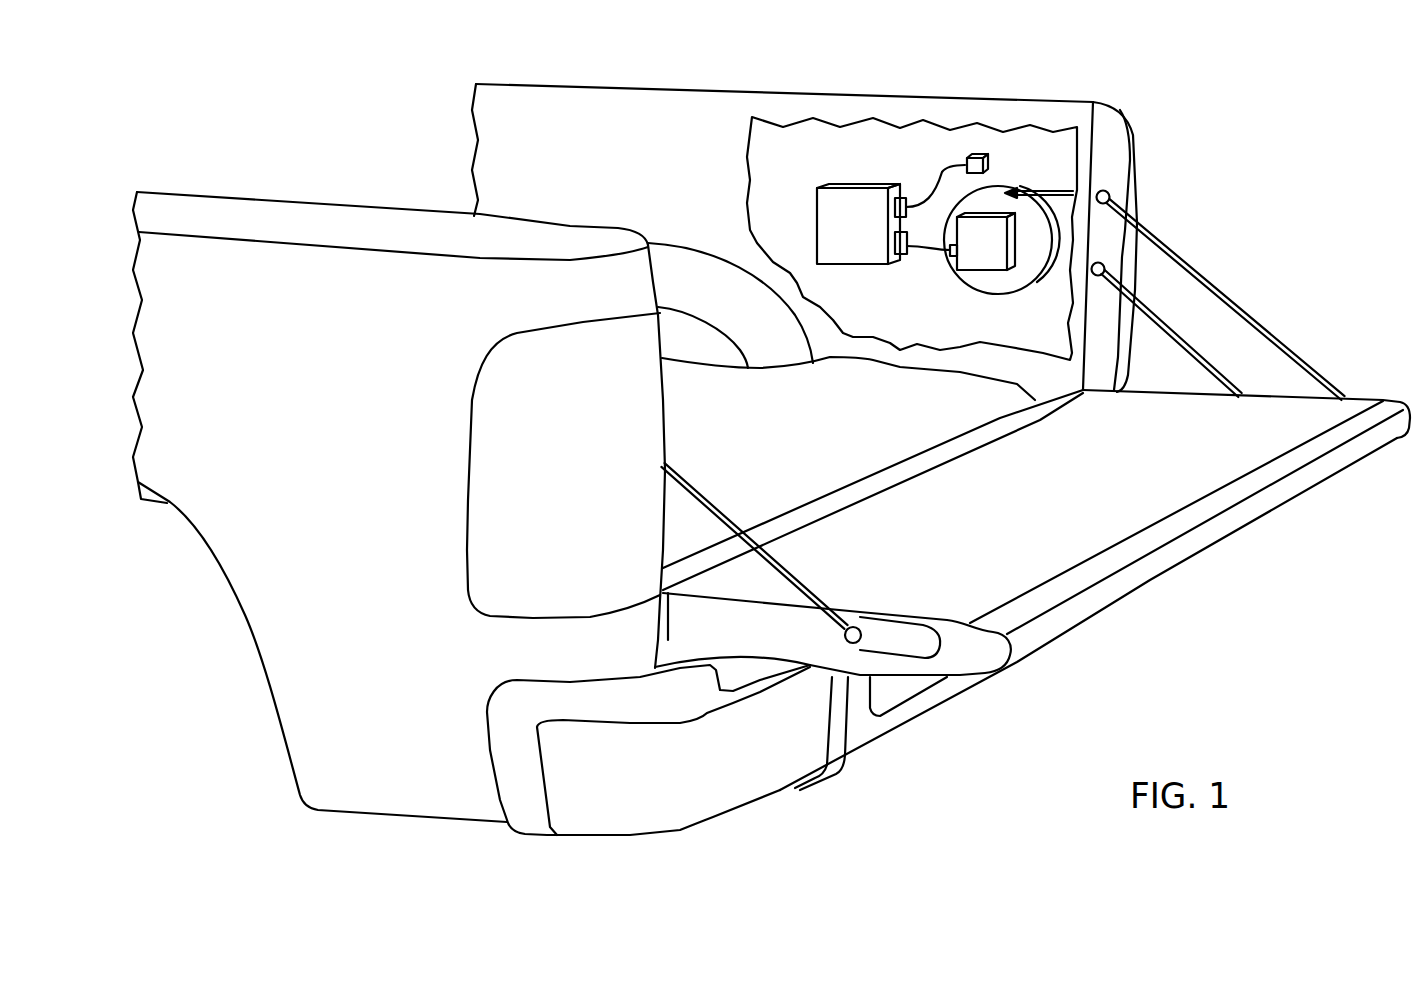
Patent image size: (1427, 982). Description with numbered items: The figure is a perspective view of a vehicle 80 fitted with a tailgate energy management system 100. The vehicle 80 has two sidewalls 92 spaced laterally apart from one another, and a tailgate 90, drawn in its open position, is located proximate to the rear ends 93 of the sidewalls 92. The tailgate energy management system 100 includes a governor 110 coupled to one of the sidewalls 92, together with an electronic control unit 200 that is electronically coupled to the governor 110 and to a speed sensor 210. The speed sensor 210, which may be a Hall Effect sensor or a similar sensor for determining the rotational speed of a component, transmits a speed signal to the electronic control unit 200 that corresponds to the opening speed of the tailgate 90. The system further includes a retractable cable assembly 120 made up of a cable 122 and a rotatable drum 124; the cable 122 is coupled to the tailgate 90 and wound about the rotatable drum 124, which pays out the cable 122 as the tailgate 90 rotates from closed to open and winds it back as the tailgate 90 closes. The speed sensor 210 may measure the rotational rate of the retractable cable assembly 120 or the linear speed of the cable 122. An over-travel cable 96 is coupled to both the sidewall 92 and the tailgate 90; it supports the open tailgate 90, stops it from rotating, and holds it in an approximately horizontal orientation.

The vehicle 80 is at (1183, 86).
The tailgate 90 is at (1377, 398).
The sidewalls 92 is at (340, 226).
The rear ends 93 is at (1103, 101).
The over-travel cable 96 is at (1183, 350).
The tailgate energy management system 100 is at (791, 196).
The governor 110 is at (970, 270).
The retractable cable assembly 120 is at (1013, 300).
The cable 122 is at (1246, 318).
The rotatable drum 124 is at (1047, 280).
The electronic control unit 200 is at (868, 265).
The speed sensor 210 is at (990, 166).